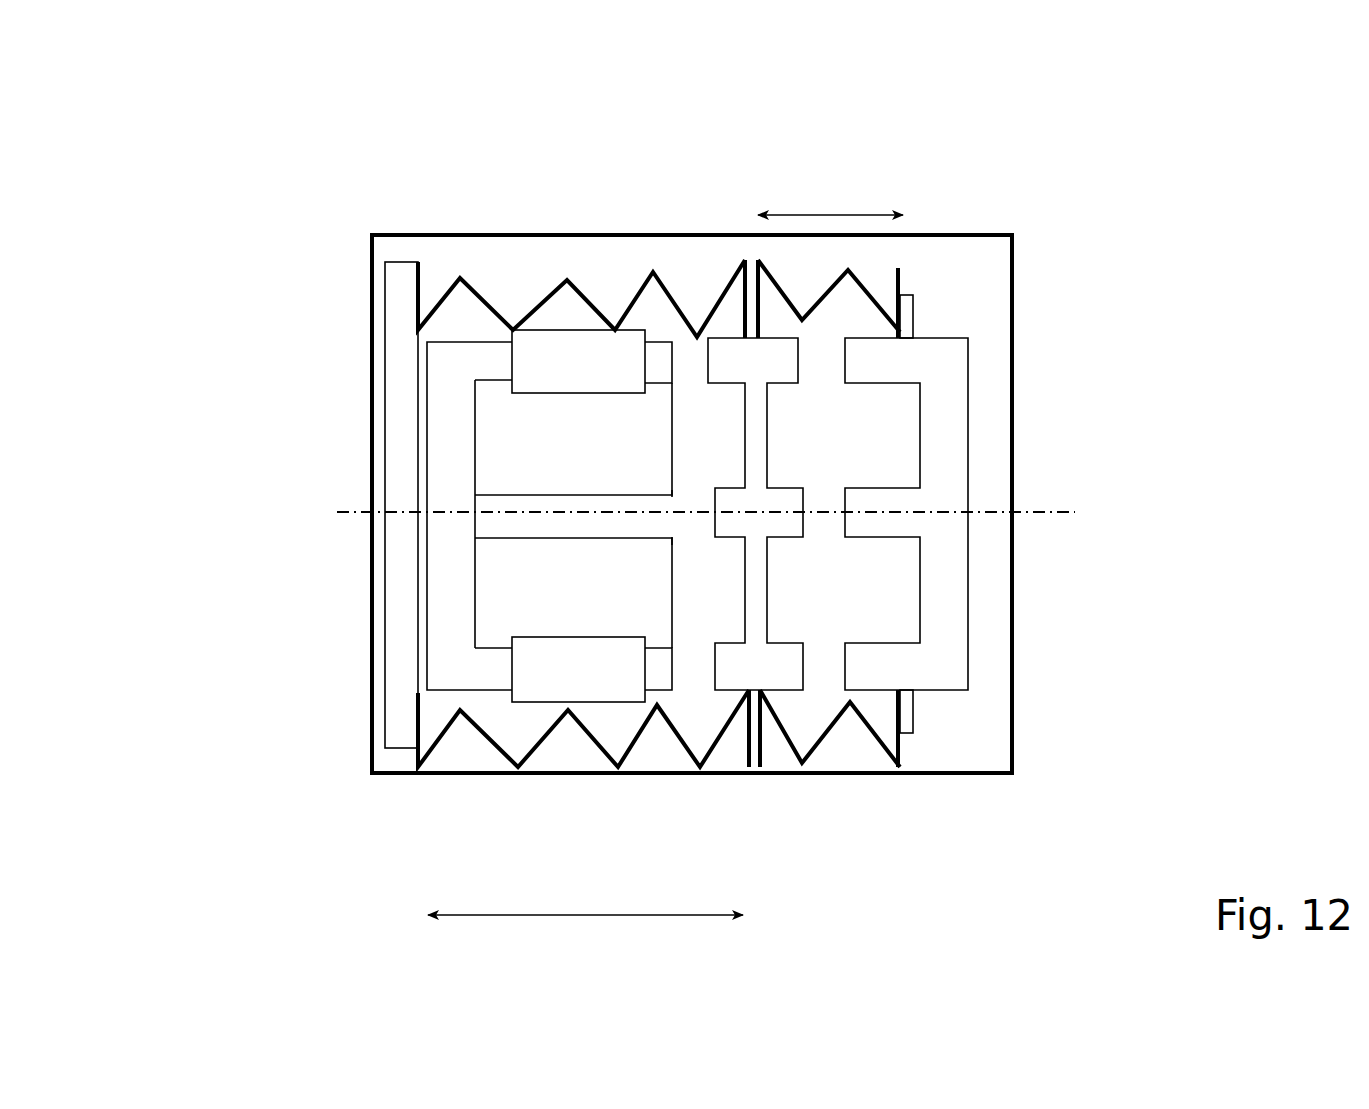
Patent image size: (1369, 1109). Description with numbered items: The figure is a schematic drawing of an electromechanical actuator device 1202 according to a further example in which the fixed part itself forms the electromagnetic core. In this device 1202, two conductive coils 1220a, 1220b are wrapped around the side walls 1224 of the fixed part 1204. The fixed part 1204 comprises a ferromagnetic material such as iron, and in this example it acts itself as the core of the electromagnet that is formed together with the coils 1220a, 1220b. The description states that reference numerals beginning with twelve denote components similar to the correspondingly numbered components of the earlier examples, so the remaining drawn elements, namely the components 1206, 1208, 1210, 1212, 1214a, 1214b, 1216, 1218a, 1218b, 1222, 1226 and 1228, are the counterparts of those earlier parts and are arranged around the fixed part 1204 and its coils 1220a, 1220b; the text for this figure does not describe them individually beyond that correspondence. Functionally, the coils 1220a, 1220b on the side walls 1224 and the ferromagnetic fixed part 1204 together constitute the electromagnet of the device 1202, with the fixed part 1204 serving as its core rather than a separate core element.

The electromechanical actuator device 1202 is at (163, 195).
The fixed part 1204 is at (668, 630).
The substrate 1206 is at (720, 322).
The right C-shaped conductive element 1208 is at (980, 362).
The meandered (zigzag) conductive trace 1210 is at (542, 292).
The left conductive strip 1212 is at (400, 633).
The upper feed/via pair 1214a is at (752, 330).
The lower feed/via pair 1214b is at (757, 700).
The vertical conductive post 1216 is at (900, 267).
The upper stub 1218a is at (913, 317).
The lower stub 1218b is at (917, 712).
The conductive coil 1220a is at (548, 378).
The conductive coil 1220b is at (562, 667).
The center axis 1222 is at (745, 512).
The side walls 1224 is at (467, 357).
The vertical bar of left conductive element 1226 is at (440, 497).
The coupling gap 1228 is at (655, 528).